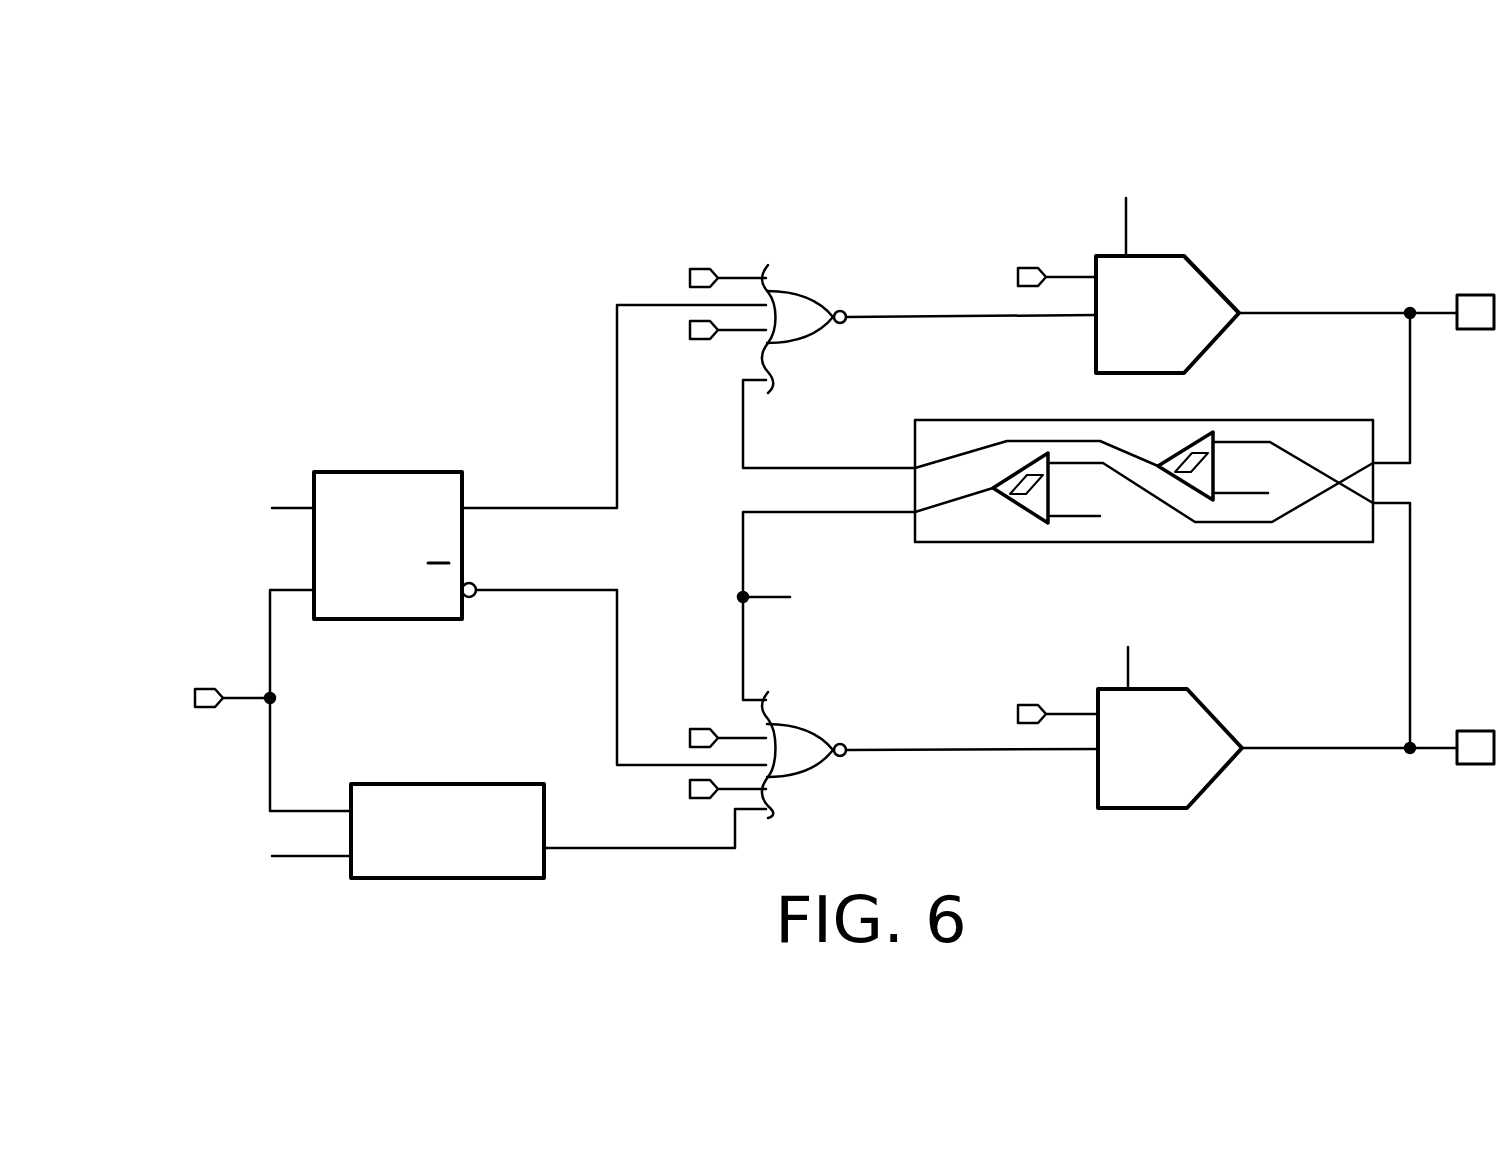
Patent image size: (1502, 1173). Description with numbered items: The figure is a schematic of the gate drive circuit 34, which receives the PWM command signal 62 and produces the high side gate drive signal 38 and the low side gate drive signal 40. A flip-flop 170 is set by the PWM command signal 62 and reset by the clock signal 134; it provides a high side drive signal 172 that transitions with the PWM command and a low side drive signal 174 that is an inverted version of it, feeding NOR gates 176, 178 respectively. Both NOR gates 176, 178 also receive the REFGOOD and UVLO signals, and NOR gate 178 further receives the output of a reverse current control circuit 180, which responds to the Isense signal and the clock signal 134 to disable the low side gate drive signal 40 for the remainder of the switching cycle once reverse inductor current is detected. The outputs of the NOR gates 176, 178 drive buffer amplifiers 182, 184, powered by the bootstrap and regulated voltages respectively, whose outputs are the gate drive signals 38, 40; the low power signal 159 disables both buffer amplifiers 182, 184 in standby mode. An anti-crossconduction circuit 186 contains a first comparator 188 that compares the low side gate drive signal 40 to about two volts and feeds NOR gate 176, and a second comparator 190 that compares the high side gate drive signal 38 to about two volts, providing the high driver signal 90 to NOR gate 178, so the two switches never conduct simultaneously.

The gate drive circuit 34 is at (827, 178).
The high side gate drive signal 38 is at (1460, 295).
The low side gate drive signal 40 is at (1472, 765).
The PWM command signal 62 is at (295, 503).
The high driver signal 90 is at (837, 613).
The clock signal 134 is at (270, 672).
The low power signal 159 is at (1067, 272).
The flip-flop 170 is at (357, 470).
The high side drive signal 172 is at (614, 388).
The low side drive signal 174 is at (617, 708).
The NOR gate 176 is at (818, 300).
The NOR gate 178 is at (807, 727).
The reverse current control circuit 180 is at (438, 785).
The high side buffer amplifier 182 is at (1203, 270).
The low side buffer amplifier 184 is at (1213, 711).
The anti-crossconduction circuit 186 is at (1076, 530).
The first comparator 188 is at (1183, 452).
The second comparator 190 is at (1018, 507).